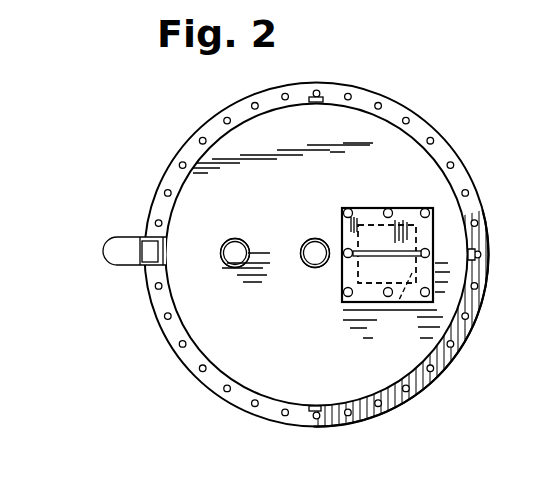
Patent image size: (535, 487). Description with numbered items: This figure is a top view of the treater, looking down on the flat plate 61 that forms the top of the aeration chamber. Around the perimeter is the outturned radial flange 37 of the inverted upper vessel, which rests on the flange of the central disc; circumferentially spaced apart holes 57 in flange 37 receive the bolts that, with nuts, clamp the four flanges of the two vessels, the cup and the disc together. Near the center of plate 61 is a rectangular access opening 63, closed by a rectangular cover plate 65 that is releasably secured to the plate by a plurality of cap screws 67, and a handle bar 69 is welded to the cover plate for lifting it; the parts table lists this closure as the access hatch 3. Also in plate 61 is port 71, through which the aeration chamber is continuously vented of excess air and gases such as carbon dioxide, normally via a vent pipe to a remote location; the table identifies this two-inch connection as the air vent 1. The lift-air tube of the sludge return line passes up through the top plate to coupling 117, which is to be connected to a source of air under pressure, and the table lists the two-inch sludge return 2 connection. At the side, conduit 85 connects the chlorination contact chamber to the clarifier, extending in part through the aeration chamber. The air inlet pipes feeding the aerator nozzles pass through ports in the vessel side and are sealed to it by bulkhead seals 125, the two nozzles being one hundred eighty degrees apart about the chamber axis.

The air vent 1 is at (242, 240).
The sludge return 2 is at (319, 240).
The access hatch 3 is at (426, 237).
The outturned radial flange 37 is at (425, 384).
The circumferentially spaced apart holes 57 is at (451, 161).
The flat plate 61 is at (176, 364).
The rectangular access opening 63 is at (400, 303).
The rectangular cover plate 65 is at (368, 208).
The cap screws 67 is at (390, 209).
The handle bar 69 is at (360, 259).
The port 71 is at (226, 242).
The conduit 85 is at (100, 270).
The coupling 117 is at (308, 241).
The bulkhead seals 125 is at (326, 84).